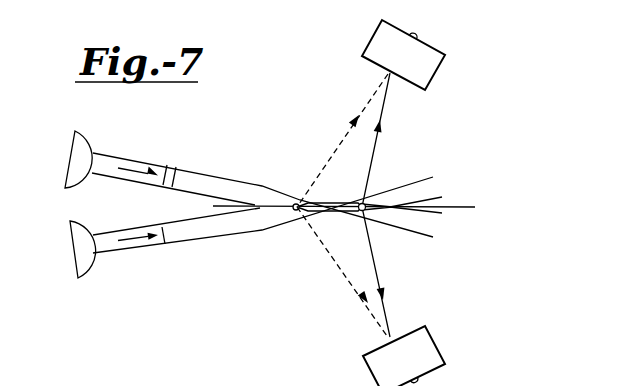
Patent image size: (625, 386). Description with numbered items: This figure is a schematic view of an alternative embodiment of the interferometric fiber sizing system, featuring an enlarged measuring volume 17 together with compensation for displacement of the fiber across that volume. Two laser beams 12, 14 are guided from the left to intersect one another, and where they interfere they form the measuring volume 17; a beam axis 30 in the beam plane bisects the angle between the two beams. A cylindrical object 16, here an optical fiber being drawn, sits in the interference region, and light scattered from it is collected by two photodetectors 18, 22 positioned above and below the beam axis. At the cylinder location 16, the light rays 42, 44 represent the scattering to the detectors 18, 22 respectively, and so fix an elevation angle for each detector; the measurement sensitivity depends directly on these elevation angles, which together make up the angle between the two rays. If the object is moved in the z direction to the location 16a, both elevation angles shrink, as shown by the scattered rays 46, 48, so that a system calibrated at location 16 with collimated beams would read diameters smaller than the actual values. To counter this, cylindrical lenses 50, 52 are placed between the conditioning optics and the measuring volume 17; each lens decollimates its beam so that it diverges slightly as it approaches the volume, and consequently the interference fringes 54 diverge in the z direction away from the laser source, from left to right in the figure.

The laser beam 12 is at (214, 173).
The laser beam 14 is at (183, 243).
The cylindrical object 16 is at (358, 200).
The cylinder location 16a is at (293, 200).
The measuring volume 17 is at (339, 200).
The photodetector 18 is at (378, 37).
The photodetector 22 is at (440, 346).
The beam axis 30 is at (455, 205).
The light ray 42 is at (373, 152).
The light ray 44 is at (374, 241).
The scattered ray 46 is at (345, 142).
The scattered ray 48 is at (326, 249).
The cylindrical lens 50 is at (77, 131).
The cylindrical lens 52 is at (93, 268).
The interference fringes 54 is at (317, 230).